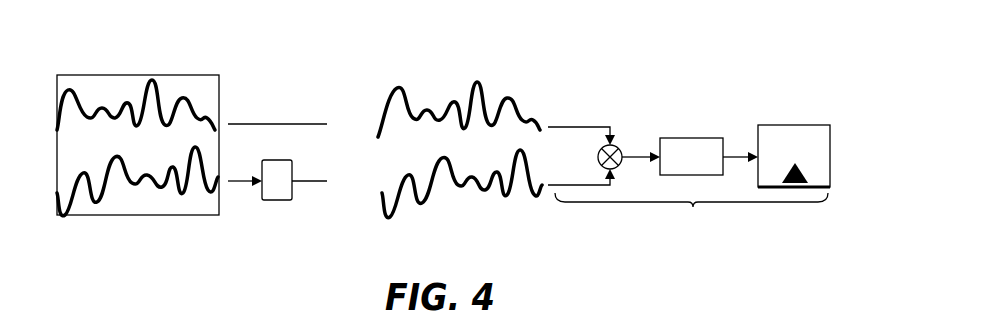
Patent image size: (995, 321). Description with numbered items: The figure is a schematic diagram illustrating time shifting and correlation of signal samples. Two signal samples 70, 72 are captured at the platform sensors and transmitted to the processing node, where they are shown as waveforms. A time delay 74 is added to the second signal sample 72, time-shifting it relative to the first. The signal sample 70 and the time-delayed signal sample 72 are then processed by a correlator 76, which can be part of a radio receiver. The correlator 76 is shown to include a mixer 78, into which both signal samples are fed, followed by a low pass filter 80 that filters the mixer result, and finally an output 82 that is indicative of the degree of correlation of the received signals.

The signal sample 70 is at (82, 102).
The signal sample 72 is at (75, 197).
The time delay 74 is at (275, 200).
The correlator 76 is at (691, 217).
The mixer 78 is at (617, 148).
The low pass filter 80 is at (692, 138).
The output 82 is at (795, 125).